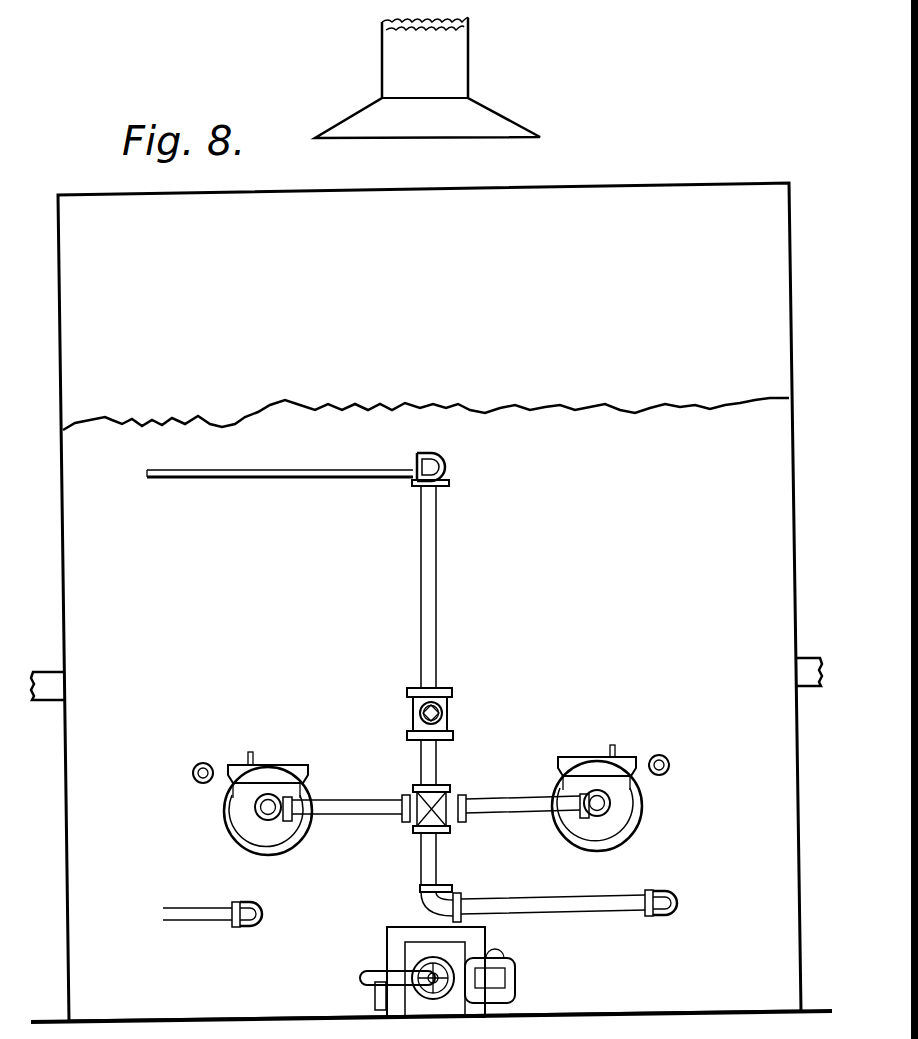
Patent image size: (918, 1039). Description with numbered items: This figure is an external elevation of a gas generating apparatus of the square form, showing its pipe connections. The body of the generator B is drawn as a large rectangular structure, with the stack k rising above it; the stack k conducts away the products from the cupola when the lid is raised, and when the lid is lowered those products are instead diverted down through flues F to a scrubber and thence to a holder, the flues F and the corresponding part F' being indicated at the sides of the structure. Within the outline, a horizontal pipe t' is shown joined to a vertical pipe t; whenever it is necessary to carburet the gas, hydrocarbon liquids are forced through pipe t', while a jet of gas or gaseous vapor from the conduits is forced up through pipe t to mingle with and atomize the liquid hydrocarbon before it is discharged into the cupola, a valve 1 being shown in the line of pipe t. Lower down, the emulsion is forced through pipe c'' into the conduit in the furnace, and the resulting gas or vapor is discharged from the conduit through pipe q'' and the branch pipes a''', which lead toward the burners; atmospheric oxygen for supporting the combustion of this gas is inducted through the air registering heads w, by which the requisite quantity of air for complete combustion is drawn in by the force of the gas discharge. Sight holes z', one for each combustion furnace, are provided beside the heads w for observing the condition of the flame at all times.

The stack k is at (427, 80).
The tank B is at (431, 602).
The flues F is at (811, 693).
The bracket F' is at (46, 702).
The pipe t' is at (280, 488).
The pipe t is at (433, 669).
The valve 1 is at (466, 712).
The pipe a''' is at (436, 813).
The air registering head w is at (275, 815).
The sight holes z' is at (428, 767).
The pipe c'' is at (212, 898).
The pipe q'' is at (548, 920).